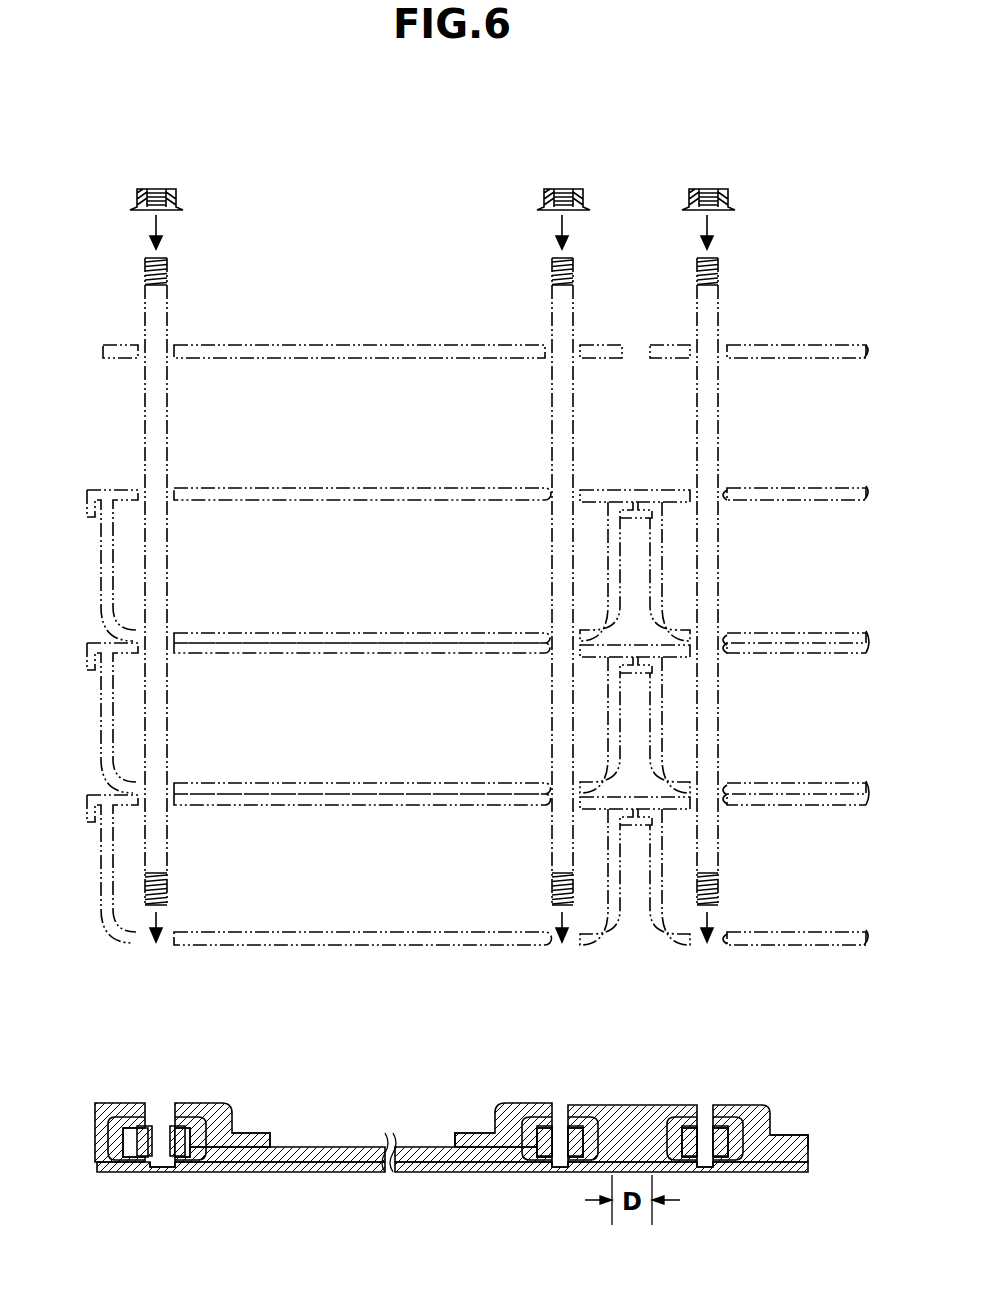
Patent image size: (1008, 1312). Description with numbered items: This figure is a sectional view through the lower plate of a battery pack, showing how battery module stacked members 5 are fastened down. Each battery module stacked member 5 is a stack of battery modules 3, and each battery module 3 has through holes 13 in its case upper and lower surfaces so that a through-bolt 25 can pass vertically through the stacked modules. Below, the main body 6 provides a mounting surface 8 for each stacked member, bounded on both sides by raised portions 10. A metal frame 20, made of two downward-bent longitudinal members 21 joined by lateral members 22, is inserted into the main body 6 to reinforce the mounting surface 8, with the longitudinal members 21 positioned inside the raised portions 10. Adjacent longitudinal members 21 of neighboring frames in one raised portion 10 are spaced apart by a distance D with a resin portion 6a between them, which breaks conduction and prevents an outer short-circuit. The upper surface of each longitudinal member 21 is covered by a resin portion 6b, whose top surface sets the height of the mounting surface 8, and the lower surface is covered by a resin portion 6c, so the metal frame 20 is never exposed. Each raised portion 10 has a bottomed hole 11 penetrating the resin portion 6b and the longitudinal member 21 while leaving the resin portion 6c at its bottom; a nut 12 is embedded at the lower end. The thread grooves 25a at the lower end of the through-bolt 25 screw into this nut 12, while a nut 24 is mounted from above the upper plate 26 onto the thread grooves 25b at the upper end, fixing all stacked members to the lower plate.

The battery module 3 is at (101, 575).
The battery module stacked member 5 is at (88, 695).
The main body 6 is at (459, 1133).
The resin portion 6a is at (630, 1108).
The resin portion 6b is at (205, 1105).
The resin portion 6c is at (226, 1173).
The mounting surface 8 is at (95, 1043).
The raised portion 10 is at (225, 1115).
The bottomed hole 11 is at (160, 1120).
The nut 12 is at (175, 1175).
The through hole 13 is at (548, 500).
The metal frame 20 is at (292, 1173).
The longitudinal member 21 is at (222, 1132).
The lateral member 22 is at (345, 1147).
The nut 24 is at (158, 189).
The through-bolt 25 is at (552, 420).
The thread grooves 25a is at (167, 885).
The thread grooves 25b is at (167, 272).
The upper plate 26 is at (800, 346).